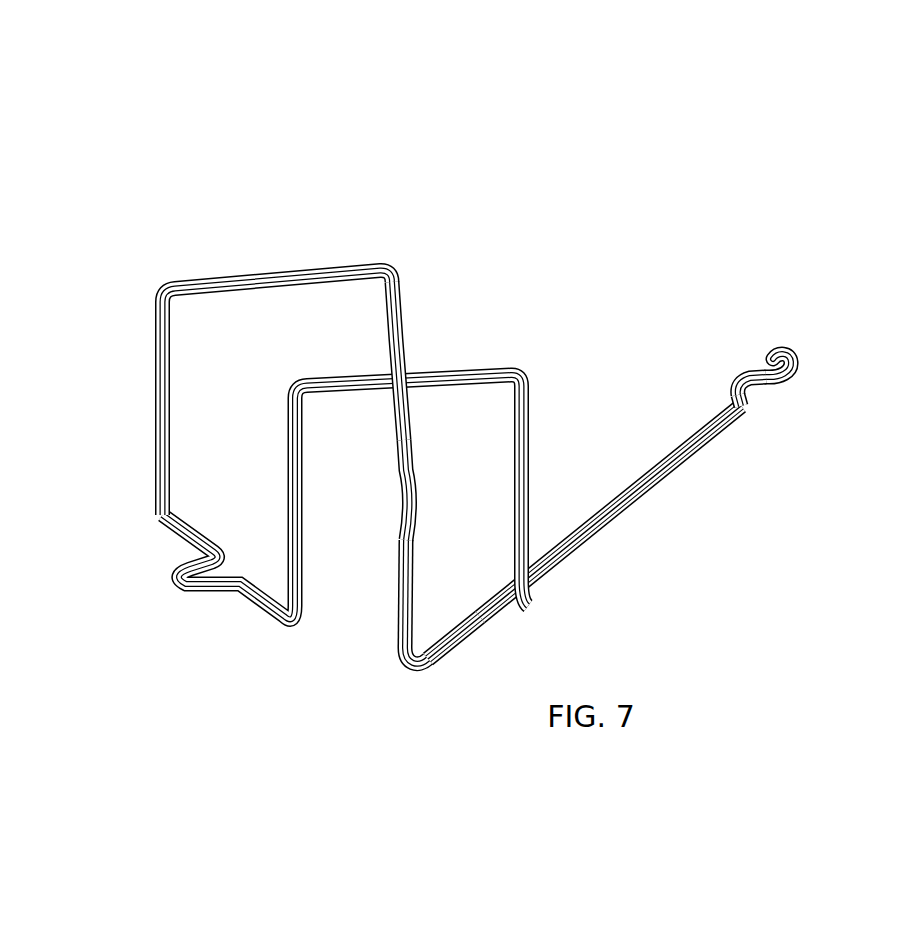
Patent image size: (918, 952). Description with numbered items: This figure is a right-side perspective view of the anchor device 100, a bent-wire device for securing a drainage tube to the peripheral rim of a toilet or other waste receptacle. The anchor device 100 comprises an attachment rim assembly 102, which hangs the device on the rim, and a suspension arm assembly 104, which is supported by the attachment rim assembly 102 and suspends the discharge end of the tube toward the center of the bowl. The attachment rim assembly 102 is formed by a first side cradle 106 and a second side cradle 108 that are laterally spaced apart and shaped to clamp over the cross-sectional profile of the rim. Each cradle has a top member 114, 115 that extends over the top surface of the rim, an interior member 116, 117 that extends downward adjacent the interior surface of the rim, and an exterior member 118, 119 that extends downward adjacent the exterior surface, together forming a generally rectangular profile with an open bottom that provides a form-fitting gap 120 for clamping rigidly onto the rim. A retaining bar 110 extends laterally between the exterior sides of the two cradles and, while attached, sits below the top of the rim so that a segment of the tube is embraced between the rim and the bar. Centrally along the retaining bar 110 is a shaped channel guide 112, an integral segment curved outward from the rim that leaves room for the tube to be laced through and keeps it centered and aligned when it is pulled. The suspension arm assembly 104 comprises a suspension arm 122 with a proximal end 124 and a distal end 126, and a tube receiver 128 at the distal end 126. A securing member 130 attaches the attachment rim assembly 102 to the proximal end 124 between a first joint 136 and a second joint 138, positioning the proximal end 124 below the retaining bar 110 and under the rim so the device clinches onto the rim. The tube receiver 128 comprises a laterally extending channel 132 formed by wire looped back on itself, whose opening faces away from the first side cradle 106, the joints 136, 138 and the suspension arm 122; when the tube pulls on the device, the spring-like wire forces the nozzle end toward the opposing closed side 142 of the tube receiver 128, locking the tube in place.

The anchor device 100 is at (572, 200).
The attachment rim assembly 102 is at (243, 240).
The suspension arm assembly 104 is at (617, 550).
The first side frame structure or cradle 106 is at (133, 350).
The second side frame structure or cradle 108 is at (265, 492).
The retaining bar 110 is at (255, 602).
The shaped channel guide 112 is at (168, 585).
The top member 114 is at (308, 267).
The top member 115 is at (343, 380).
The interior member 116 is at (406, 350).
The interior member 117 is at (530, 488).
The exterior member 118 is at (153, 432).
The exterior member 119 is at (286, 453).
The form-fitting gap 120 is at (355, 620).
The suspension arm 122 is at (657, 487).
The proximal end 124 is at (443, 676).
The distal end 126 is at (715, 400).
The tube receiver 128 is at (759, 348).
The securing member 130 is at (413, 580).
The laterally extending channel 132 is at (768, 405).
The first joint 136 is at (405, 678).
The second joint 138 is at (430, 500).
The opposing closed side 142 is at (740, 368).